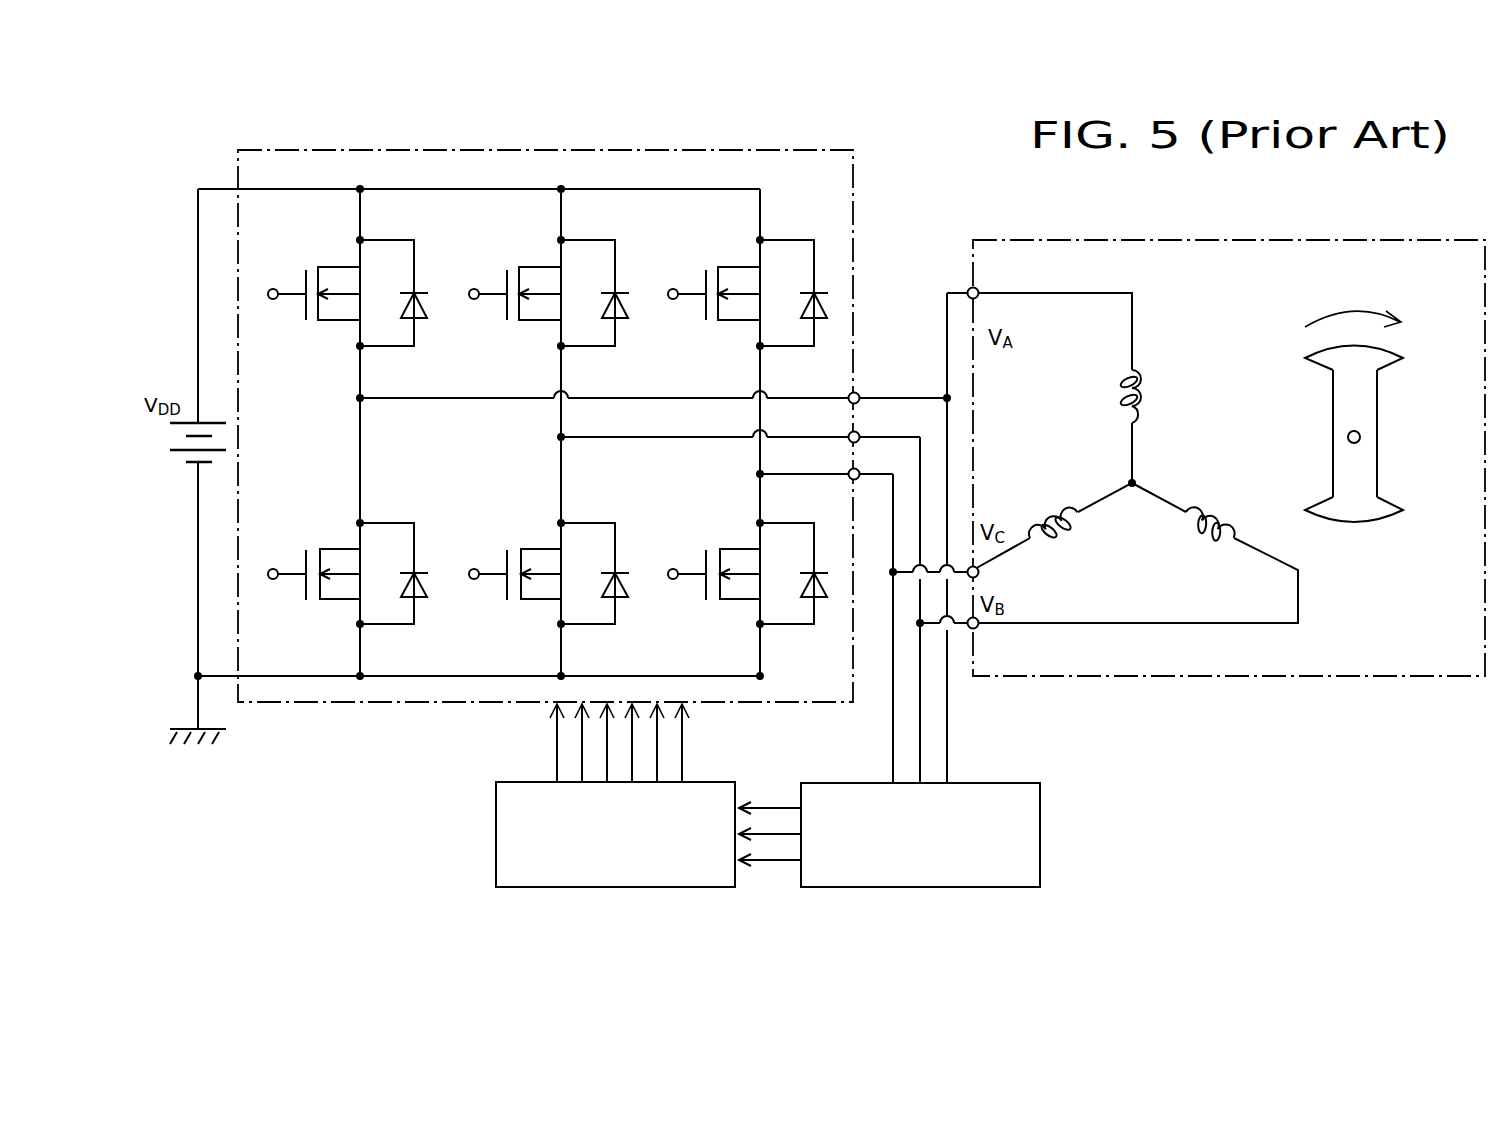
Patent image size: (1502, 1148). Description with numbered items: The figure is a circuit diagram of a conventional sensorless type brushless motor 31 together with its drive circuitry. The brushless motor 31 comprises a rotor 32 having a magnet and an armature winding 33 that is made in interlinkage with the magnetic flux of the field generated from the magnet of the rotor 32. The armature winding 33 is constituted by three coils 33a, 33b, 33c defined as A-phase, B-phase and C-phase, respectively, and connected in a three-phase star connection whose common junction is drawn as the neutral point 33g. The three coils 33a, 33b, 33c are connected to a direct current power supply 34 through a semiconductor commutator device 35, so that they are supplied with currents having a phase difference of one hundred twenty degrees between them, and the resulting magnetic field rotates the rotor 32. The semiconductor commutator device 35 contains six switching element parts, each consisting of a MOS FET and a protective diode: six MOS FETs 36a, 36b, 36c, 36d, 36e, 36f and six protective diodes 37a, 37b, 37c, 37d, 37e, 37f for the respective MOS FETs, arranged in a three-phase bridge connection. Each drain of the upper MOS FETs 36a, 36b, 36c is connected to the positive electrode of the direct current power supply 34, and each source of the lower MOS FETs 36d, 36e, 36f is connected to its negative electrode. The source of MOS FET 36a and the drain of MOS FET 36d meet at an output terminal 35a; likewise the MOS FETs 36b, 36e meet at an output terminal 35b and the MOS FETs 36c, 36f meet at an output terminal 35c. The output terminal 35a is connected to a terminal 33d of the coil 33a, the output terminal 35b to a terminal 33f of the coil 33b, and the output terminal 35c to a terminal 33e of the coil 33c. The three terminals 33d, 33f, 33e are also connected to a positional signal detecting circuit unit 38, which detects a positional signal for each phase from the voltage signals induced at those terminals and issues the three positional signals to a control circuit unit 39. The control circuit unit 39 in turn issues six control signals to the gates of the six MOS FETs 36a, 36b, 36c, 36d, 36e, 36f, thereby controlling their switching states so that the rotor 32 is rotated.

The sensorless type brushless motor 31 is at (1000, 240).
The rotor 32 is at (1377, 413).
The armature winding 33 is at (1191, 440).
The coil 33a is at (1108, 396).
The coil 33b is at (1222, 518).
The coil 33c is at (1066, 532).
The terminal 33d is at (978, 289).
The terminal 33e is at (978, 576).
The terminal 33f is at (978, 627).
The neutral point 33g is at (1138, 483).
The direct current power supply 34 is at (184, 442).
The semiconductor commutator device 35 is at (853, 240).
The output terminal 35a is at (859, 394).
The output terminal 35b is at (859, 433).
The output terminal 35c is at (859, 470).
The MOS FET 36a is at (311, 281).
The MOS FET 36b is at (512, 281).
The MOS FET 36c is at (713, 281).
The MOS FET 36d is at (311, 563).
The MOS FET 36e is at (512, 563).
The MOS FET 36f is at (713, 563).
The protective diode 37a is at (426, 298).
The protective diode 37b is at (627, 298).
The protective diode 37c is at (826, 298).
The protective diode 37d is at (428, 598).
The protective diode 37e is at (629, 598).
The protective diode 37f is at (828, 598).
The positional signal detecting circuit unit 38 is at (890, 887).
The control circuit unit 39 is at (585, 887).